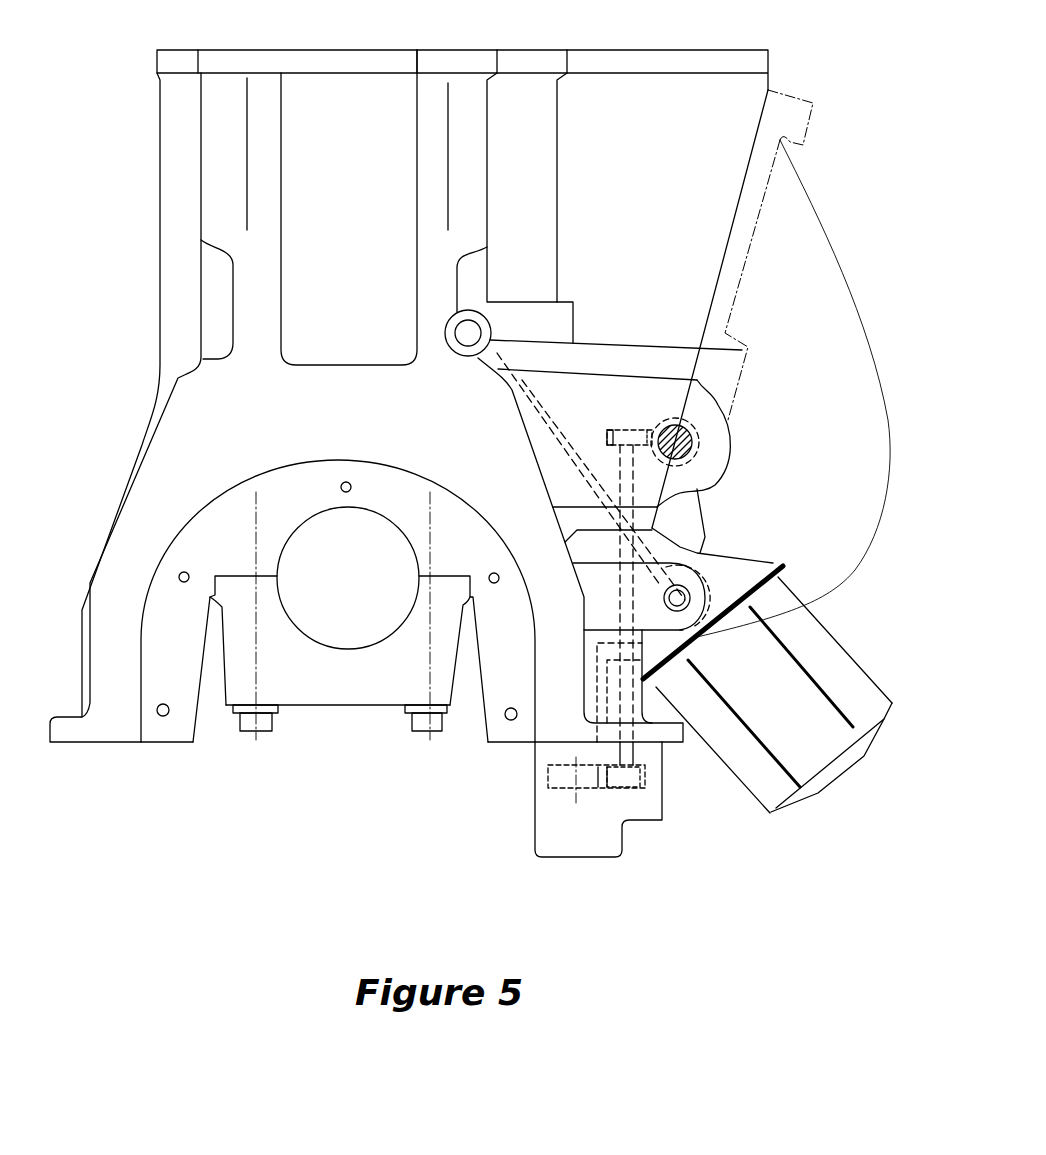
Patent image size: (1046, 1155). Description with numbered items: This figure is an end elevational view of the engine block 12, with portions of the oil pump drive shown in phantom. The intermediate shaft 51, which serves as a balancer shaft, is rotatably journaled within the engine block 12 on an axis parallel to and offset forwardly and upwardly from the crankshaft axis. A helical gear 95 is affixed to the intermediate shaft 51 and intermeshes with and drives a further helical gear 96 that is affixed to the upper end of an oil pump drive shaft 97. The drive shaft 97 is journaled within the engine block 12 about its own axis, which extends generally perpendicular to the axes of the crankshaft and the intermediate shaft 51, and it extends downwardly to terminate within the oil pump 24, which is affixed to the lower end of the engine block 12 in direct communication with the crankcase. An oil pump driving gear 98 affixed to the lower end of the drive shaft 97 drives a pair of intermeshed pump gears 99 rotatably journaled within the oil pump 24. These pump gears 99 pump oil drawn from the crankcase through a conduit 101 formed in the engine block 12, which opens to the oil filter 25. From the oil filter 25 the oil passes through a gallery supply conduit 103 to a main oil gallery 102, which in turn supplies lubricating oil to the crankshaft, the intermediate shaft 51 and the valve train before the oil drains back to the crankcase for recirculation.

The engine block 12 is at (772, 54).
The oil pump 24 is at (534, 840).
The oil filter 25 is at (857, 657).
The intermediate shaft 51 is at (673, 418).
The helical gear 95 is at (706, 442).
The helical gear 96 is at (623, 428).
The oil pump drive shaft 97 is at (620, 603).
The oil pump driving gear 98 is at (645, 775).
The pump gears 99 is at (590, 788).
The conduit 101 is at (603, 690).
The main oil gallery 102 is at (450, 347).
The gallery supply conduit 103 is at (547, 451).